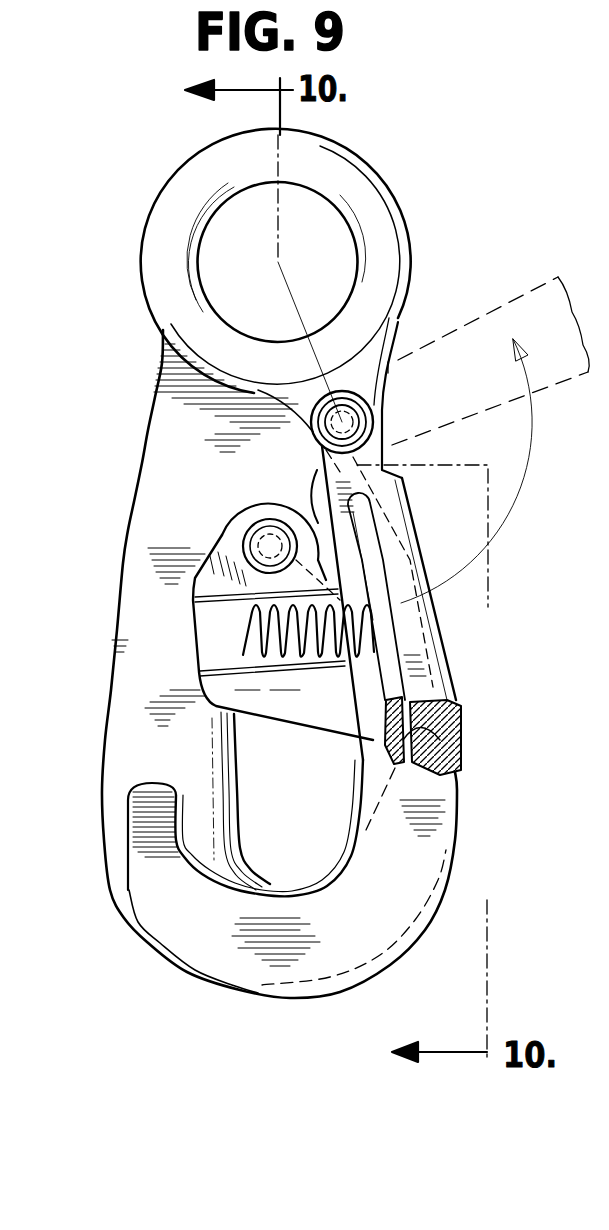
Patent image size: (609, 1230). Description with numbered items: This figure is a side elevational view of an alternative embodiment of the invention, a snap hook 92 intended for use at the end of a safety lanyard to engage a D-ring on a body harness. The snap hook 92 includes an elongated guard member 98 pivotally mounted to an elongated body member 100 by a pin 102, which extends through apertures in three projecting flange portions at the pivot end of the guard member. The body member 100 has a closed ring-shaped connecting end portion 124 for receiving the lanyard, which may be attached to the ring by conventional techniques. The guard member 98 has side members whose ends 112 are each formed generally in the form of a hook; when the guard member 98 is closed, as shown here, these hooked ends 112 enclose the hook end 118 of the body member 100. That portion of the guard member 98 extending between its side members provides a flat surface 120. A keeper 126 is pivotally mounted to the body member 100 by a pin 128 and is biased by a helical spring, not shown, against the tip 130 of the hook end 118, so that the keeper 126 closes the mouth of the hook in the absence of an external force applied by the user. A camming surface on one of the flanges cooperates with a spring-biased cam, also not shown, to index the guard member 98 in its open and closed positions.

The snap hook 92 is at (140, 372).
The guard member 98 is at (445, 620).
The body member 100 is at (158, 510).
The pin 102 is at (345, 422).
The ends of side members 112 is at (258, 972).
The hook end 118 is at (373, 977).
The flat surface 120 is at (437, 640).
The connecting end portion 124 is at (368, 185).
The keeper 126 is at (281, 712).
The pin 128 is at (266, 543).
The tip 130 is at (410, 778).